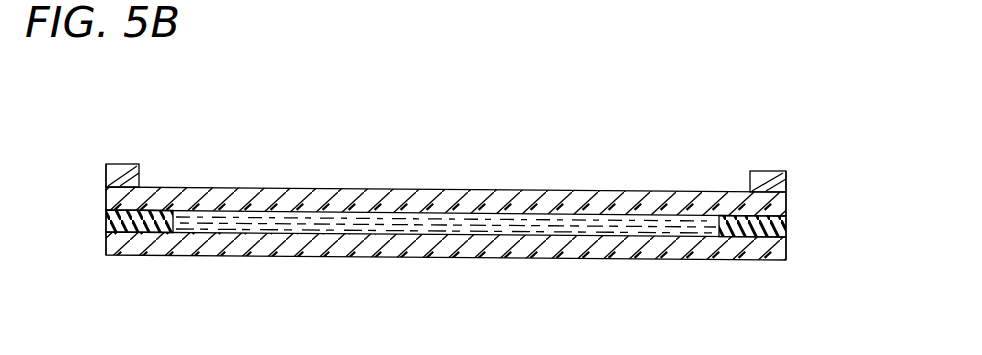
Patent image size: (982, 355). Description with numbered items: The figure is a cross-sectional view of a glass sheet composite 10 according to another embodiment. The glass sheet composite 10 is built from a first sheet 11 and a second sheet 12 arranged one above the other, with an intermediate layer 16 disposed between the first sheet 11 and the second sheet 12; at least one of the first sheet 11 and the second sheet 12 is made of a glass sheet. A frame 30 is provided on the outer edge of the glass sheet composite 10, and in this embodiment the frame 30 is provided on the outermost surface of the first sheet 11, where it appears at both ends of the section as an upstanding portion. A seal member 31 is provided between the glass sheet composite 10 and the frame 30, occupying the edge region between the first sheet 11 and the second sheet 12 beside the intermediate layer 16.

The glass sheet composite 10 is at (428, 212).
The first sheet 11 is at (537, 203).
The second sheet 12 is at (517, 242).
The intermediate layer 16 is at (399, 235).
The frame 30 is at (773, 172).
The seal member 31 is at (107, 223).